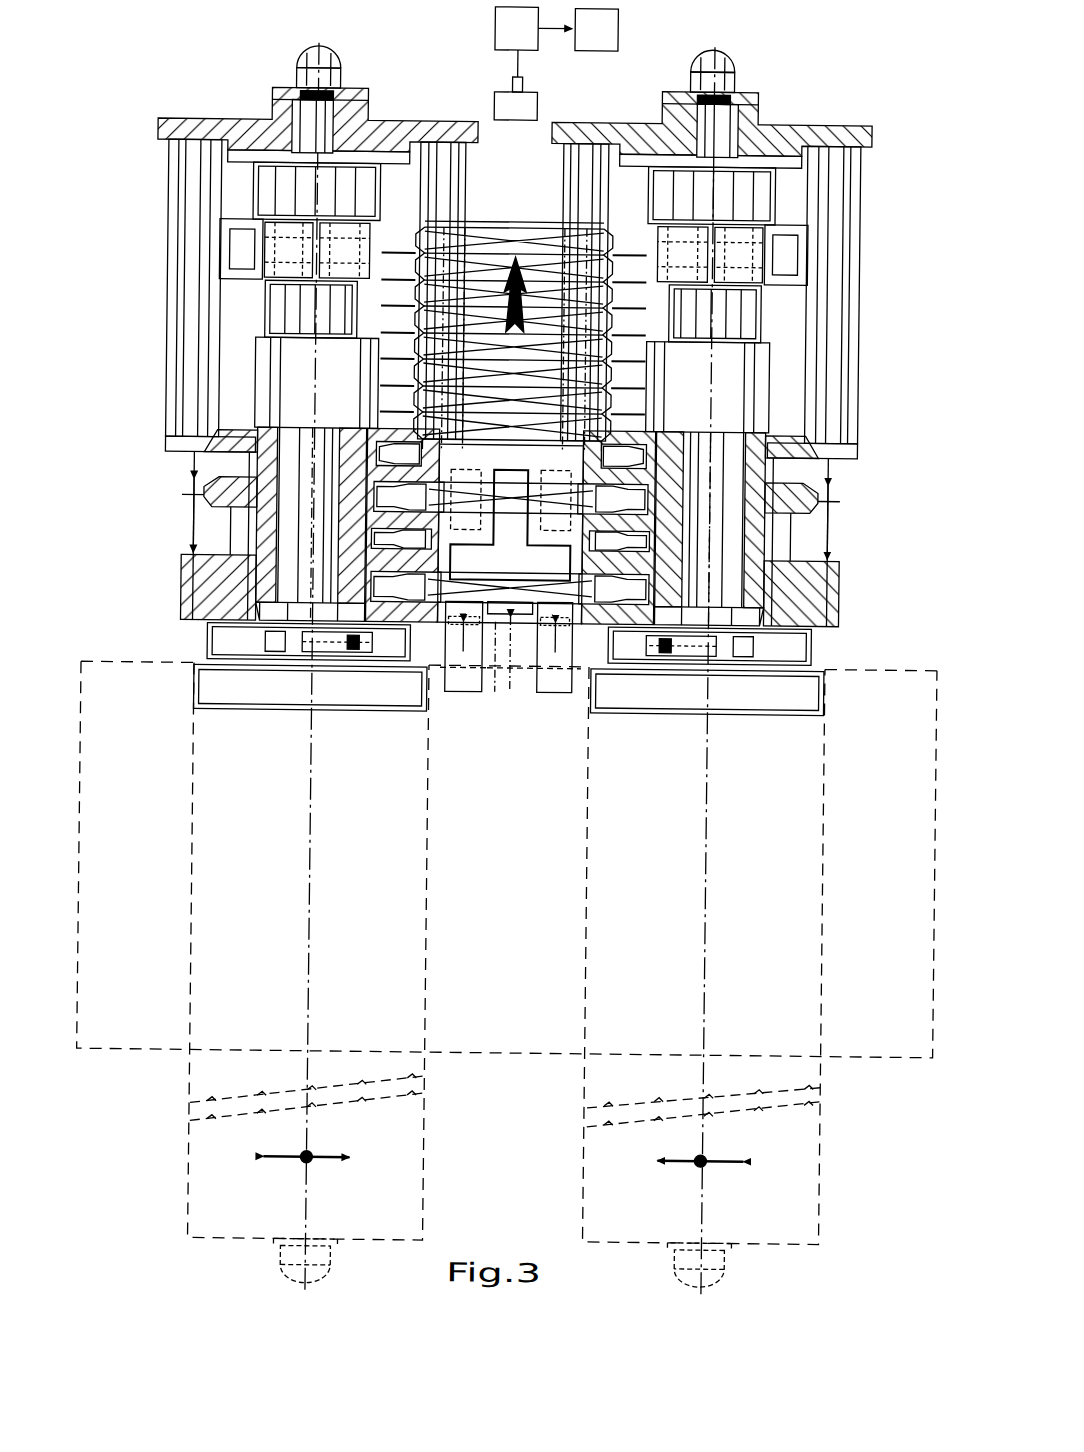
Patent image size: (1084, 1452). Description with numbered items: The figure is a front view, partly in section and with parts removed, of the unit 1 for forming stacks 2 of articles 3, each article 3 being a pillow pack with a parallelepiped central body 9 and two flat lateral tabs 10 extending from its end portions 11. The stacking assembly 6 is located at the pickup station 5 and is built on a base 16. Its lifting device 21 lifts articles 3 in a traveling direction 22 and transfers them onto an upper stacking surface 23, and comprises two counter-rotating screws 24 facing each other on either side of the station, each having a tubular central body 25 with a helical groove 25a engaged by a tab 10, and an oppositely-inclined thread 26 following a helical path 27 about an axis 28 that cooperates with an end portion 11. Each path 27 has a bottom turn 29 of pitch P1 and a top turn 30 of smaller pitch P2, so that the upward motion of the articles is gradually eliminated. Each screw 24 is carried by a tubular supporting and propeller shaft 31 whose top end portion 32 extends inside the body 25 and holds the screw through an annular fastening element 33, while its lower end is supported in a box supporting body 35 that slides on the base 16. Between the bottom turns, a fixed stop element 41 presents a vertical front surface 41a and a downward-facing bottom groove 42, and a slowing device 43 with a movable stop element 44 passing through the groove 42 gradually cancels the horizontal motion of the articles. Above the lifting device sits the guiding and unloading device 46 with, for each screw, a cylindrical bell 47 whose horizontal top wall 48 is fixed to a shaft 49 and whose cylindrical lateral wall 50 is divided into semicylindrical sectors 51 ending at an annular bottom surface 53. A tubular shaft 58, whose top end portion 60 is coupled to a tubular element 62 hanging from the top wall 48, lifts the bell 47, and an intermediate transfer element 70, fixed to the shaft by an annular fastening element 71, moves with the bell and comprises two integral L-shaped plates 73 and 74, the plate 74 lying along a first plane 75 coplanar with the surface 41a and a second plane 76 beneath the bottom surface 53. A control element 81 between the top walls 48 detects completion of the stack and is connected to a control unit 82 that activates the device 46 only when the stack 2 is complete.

The unit 1 is at (881, 102).
The stack 2 is at (495, 216).
The article 3 is at (480, 218).
The pickup station 5 is at (510, 664).
The stacking assembly 6 is at (833, 112).
The central body 9 is at (505, 226).
The lateral tab 10 is at (392, 242).
The end portion 11 is at (454, 226).
The base 16 is at (880, 1054).
The lifting device 21 is at (864, 500).
The traveling direction 22 is at (412, 328).
The upper stacking surface 23 is at (620, 408).
The screw 24 is at (186, 530).
The tubular central body 25 is at (265, 482).
The helical groove 25a is at (345, 624).
The thread 26 is at (198, 500).
The helical path 27 is at (180, 570).
The axis 28 is at (313, 815).
The bottom turn 29 is at (198, 575).
The top turn 30 is at (195, 490).
The tubular supporting and propeller shaft 31 is at (824, 604).
The top end portion 32 is at (824, 624).
The annular fastening element 33 is at (210, 644).
The box supporting body 35 is at (447, 1152).
The fixed stop element 41 is at (470, 654).
The vertical front surface 41a is at (553, 654).
The bottom groove 42 is at (498, 672).
The slowing device 43 is at (533, 654).
The stop element 44 is at (445, 644).
The guiding and unloading device 46 is at (586, 37).
The cylindrical bell 47 is at (164, 182).
The top wall 48 is at (377, 136).
The shaft 49 is at (285, 639).
The cylindrical lateral wall 50 is at (164, 282).
The semicylindrical sector 51 is at (180, 162).
The annular bottom surface 53 is at (205, 442).
The tubular shaft 58 is at (267, 594).
The top end portion 60 is at (270, 290).
The tubular element 62 is at (297, 182).
The intermediate transfer element 70 is at (315, 682).
The annular fastening element 71 is at (218, 235).
The plate 73 is at (508, 689).
The plate 74 is at (414, 682).
The first plane 75 is at (402, 440).
The second plane 76 is at (368, 383).
The control element 81 is at (534, 102).
The control unit 82 is at (492, 28).
The pitch P1 is at (423, 546).
The pitch P2 is at (202, 482).